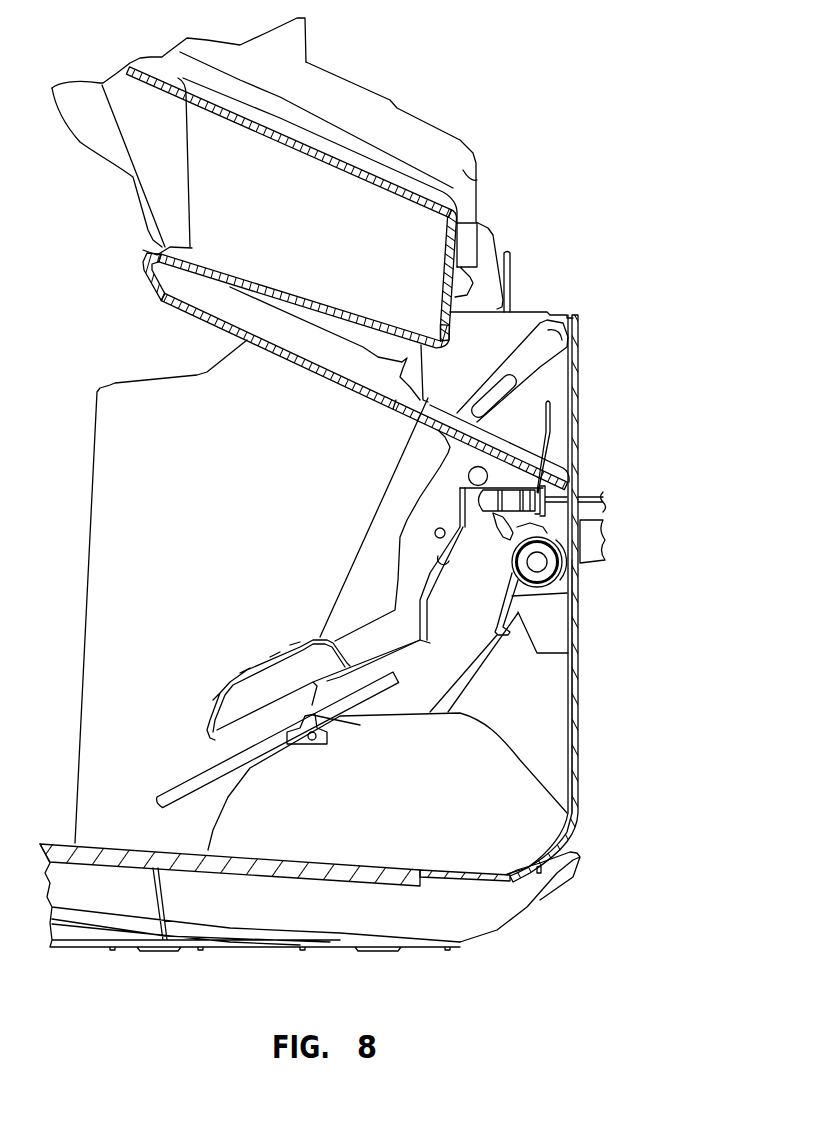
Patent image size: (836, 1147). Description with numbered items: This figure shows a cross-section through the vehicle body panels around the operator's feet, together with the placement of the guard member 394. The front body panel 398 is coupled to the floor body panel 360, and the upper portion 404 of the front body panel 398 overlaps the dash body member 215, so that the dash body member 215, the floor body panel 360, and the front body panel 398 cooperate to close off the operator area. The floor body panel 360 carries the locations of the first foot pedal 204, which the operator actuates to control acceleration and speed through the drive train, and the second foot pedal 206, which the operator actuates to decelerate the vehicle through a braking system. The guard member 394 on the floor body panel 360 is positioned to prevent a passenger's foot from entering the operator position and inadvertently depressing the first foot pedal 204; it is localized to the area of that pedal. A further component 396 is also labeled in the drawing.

The first foot pedal 204 is at (186, 774).
The second foot pedal 206 is at (217, 680).
The dash body member 215 is at (502, 451).
The floor body panel 360 is at (404, 895).
The guard member 394 is at (492, 784).
The clip 396 is at (304, 758).
The front body panel 398 is at (580, 674).
The upper portion 404 is at (587, 415).